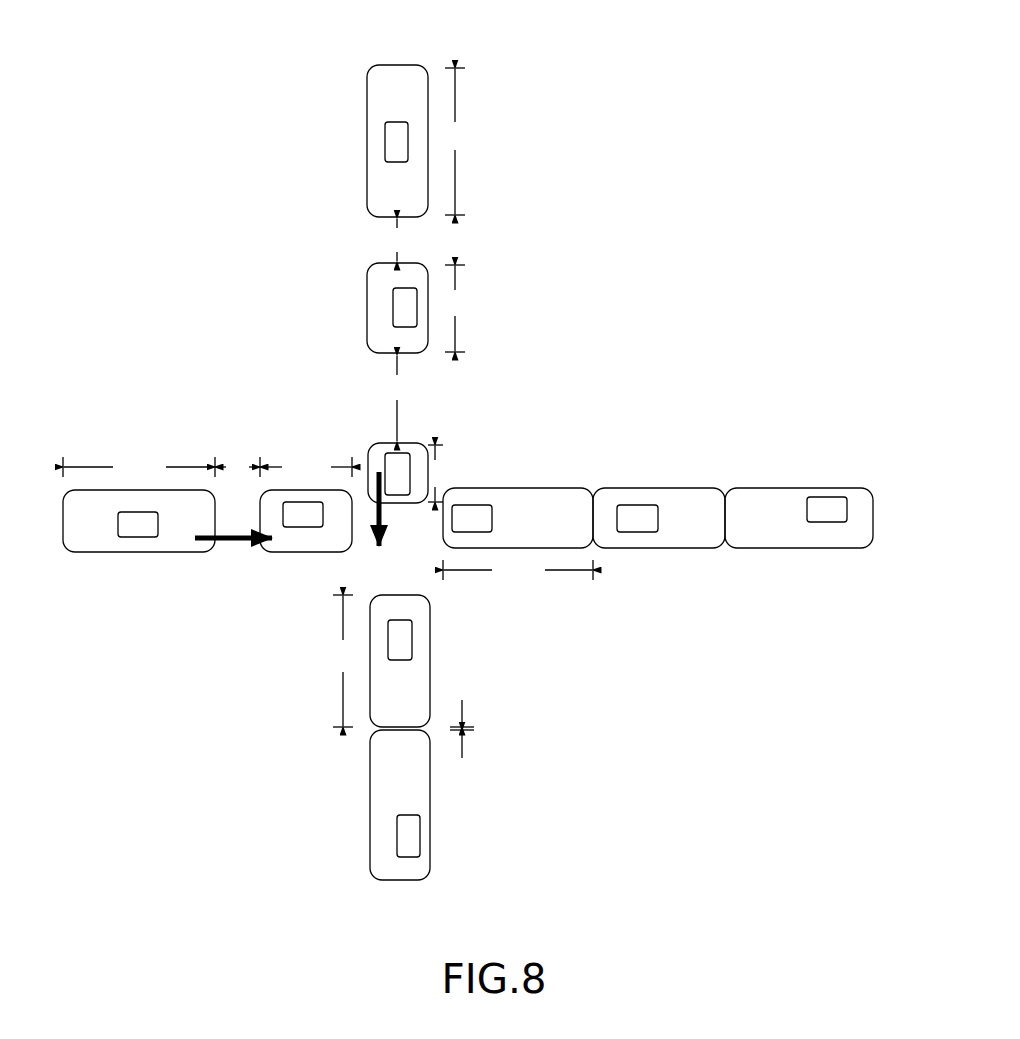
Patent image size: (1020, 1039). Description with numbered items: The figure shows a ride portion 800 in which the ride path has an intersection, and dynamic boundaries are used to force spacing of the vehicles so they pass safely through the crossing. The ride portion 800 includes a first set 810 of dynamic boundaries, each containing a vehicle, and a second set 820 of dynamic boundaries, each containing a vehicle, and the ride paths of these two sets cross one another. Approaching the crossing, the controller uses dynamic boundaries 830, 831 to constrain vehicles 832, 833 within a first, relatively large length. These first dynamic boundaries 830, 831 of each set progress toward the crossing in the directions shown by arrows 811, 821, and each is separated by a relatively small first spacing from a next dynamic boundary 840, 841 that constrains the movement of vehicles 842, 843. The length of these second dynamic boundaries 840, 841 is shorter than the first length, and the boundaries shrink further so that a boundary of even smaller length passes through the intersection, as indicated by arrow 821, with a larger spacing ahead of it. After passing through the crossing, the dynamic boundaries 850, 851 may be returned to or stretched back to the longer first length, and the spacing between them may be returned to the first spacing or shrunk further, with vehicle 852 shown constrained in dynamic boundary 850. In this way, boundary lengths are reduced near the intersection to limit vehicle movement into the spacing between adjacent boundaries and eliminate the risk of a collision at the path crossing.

The ride portion 800 is at (160, 250).
The first set of dynamic boundaries 810 is at (736, 473).
The arrow 811 is at (228, 543).
The second set of dynamic boundaries 820 is at (336, 176).
The arrow 821 is at (383, 508).
The dynamic boundary 830 is at (139, 557).
The dynamic boundary 831 is at (416, 111).
The vehicle 832 is at (158, 521).
The vehicle 833 is at (398, 120).
The next dynamic boundary 840 is at (306, 557).
The next dynamic boundary 841 is at (362, 308).
The vehicle 842 is at (300, 528).
The vehicle 843 is at (395, 324).
The dynamic boundary 850 is at (518, 484).
The dynamic boundary 851 is at (434, 660).
The vehicle 852 is at (492, 520).